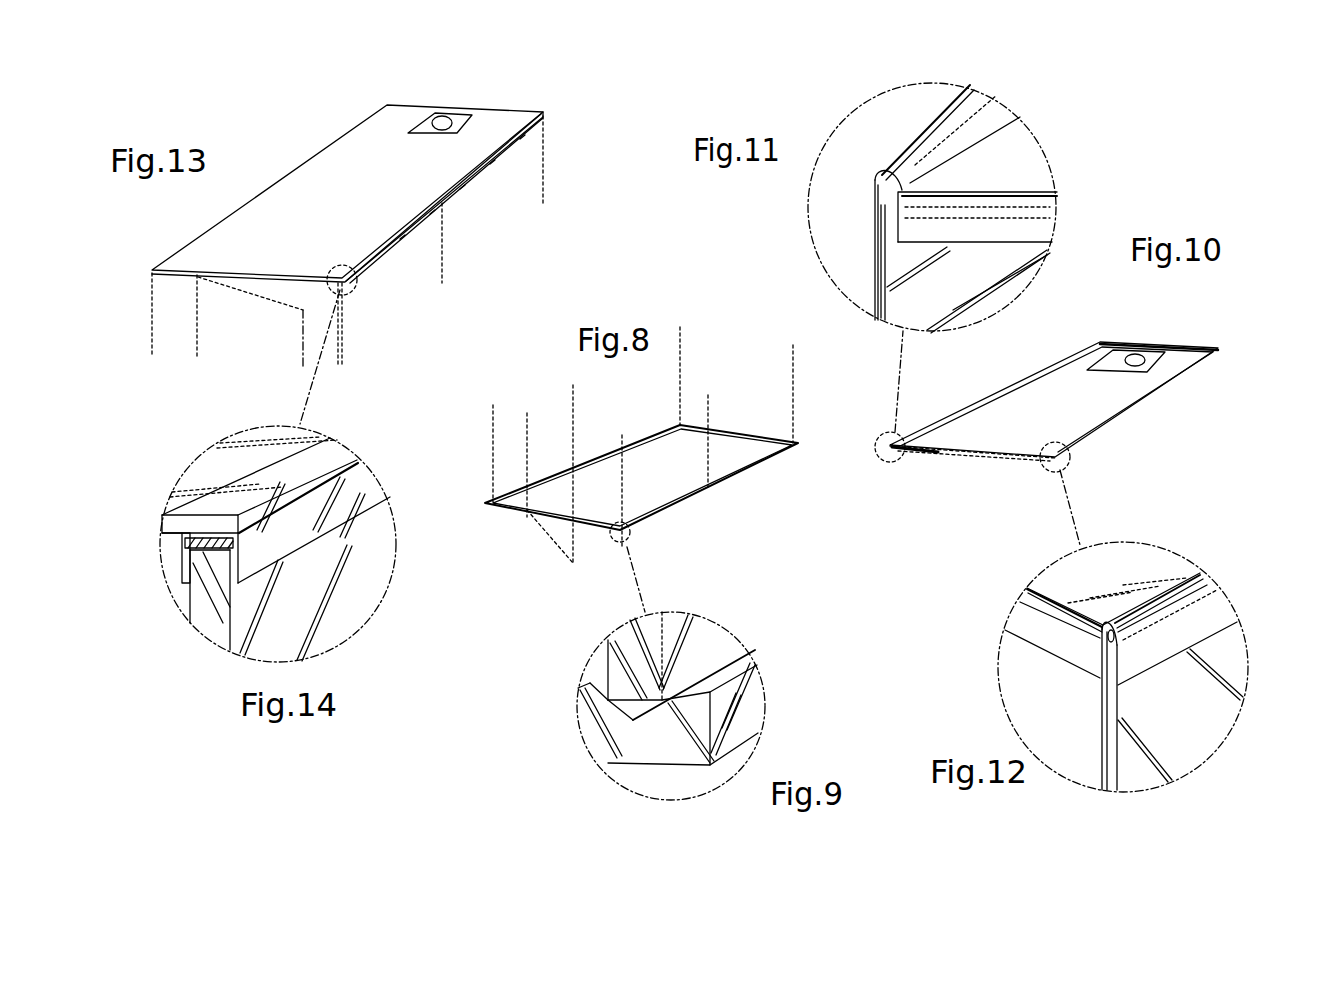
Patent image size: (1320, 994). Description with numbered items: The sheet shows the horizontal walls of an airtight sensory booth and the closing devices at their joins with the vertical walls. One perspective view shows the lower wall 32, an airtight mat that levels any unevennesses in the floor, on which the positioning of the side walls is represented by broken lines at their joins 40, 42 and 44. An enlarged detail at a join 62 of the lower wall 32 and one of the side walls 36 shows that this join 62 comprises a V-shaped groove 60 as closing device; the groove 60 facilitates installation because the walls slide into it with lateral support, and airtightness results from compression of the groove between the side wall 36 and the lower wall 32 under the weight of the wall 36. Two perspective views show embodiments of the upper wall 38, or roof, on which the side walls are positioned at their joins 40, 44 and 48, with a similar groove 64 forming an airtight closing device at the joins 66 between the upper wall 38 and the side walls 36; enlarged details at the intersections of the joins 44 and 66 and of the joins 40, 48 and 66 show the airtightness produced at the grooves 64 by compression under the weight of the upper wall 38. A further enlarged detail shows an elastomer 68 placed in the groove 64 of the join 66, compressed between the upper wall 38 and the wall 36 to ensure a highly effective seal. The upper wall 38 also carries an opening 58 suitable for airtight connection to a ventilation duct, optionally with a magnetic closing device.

In FIG. 8, the lower wall 32 is at (646, 481).
In FIG. 9, the lower wall 32 is at (608, 762).
In FIG. 14, the side wall 36 is at (286, 609).
In FIG. 9, the side wall 36 is at (700, 642).
In FIG. 12, the side wall 36 is at (1165, 723).
In FIG. 13, the upper wall 38 is at (375, 201).
In FIG. 14, the upper wall 38 is at (230, 483).
In FIG. 11, the upper wall 38 is at (928, 298).
In FIG. 10, the upper wall 38 is at (1040, 418).
In FIG. 12, the upper wall 38 is at (1100, 580).
In FIG. 13, the join 40 is at (340, 320).
In FIG. 14, the join 40 is at (205, 613).
In FIG. 8, the join 40 is at (622, 467).
In FIG. 9, the join 40 is at (632, 665).
In FIG. 12, the join 40 is at (1105, 710).
In FIG. 8, the join 42 is at (560, 547).
In FIG. 13, the join 44 is at (543, 177).
In FIG. 8, the join 44 is at (527, 435).
In FIG. 11, the join 44 is at (860, 227).
In FIG. 13, the join 48 is at (253, 270).
In FIG. 14, the join 48 is at (180, 527).
In FIG. 10, the join 48 is at (985, 452).
In FIG. 12, the join 48 is at (1042, 633).
In FIG. 13, the opening 58 is at (442, 116).
In FIG. 10, the opening 58 is at (1138, 353).
In FIG. 9, the V-shaped groove 60 is at (627, 743).
In FIG. 9, the join 62 is at (768, 653).
In FIG. 13, the groove 64 is at (212, 288).
In FIG. 14, the groove 64 is at (170, 568).
In FIG. 11, the groove 64 is at (878, 180).
In FIG. 12, the groove 64 is at (1100, 640).
In FIG. 13, the join 66 is at (507, 138).
In FIG. 14, the join 66 is at (343, 500).
In FIG. 11, the join 66 is at (878, 147).
In FIG. 10, the join 66 is at (1160, 340).
In FIG. 12, the join 66 is at (1242, 598).
In FIG. 14, the elastomer 68 is at (187, 543).